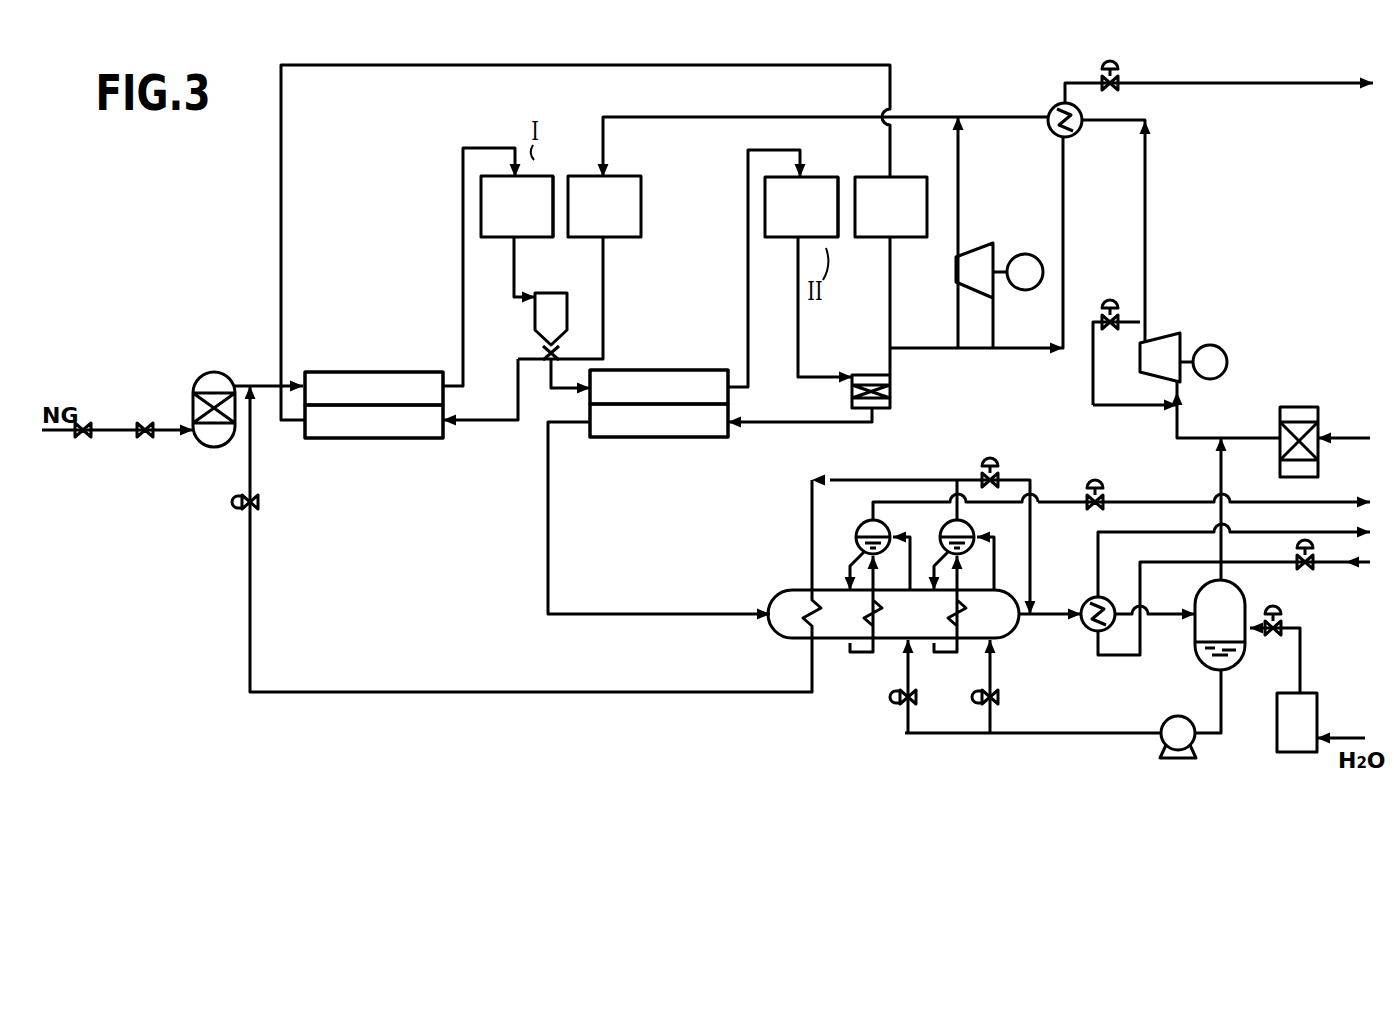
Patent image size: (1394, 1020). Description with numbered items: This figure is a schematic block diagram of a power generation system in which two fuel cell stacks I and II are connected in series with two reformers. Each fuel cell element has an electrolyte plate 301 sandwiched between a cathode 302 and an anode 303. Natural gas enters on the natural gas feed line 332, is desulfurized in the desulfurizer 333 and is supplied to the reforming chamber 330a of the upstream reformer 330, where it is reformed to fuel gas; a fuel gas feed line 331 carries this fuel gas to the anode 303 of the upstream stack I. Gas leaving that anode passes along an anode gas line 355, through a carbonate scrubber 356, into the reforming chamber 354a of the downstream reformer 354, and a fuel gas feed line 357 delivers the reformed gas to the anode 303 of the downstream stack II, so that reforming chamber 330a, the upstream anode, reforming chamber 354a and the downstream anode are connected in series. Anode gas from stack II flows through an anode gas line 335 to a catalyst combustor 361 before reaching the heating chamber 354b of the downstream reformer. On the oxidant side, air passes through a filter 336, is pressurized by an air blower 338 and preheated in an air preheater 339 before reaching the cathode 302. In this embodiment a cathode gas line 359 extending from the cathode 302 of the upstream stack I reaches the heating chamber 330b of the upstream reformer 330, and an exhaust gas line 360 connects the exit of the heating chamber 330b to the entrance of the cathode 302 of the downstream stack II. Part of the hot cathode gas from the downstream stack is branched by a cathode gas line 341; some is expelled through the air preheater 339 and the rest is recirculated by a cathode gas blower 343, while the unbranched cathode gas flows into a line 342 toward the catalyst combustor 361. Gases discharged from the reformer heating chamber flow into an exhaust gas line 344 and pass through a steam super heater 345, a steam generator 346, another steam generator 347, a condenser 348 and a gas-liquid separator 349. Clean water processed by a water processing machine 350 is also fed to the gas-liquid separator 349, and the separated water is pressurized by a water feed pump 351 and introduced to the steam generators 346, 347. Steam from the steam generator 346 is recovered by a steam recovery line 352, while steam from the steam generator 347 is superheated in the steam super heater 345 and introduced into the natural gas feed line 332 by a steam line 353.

The electrolyte plate 301 is at (704, 208).
The cathode 302 is at (594, 226).
The anode 303 is at (505, 226).
The upstream reformer 330 is at (376, 396).
The reforming chamber 330a is at (408, 378).
The heating chamber 330b is at (352, 432).
The fuel gas feed line 331 is at (463, 262).
The natural gas feed line 332 is at (113, 427).
The desulfurizer 333 is at (208, 372).
The anode gas line 335 is at (800, 360).
The filter 336 is at (1300, 407).
The air blower 338 is at (1168, 346).
The air preheater 339 is at (1082, 131).
The cathode gas line 341 is at (888, 320).
The line 342 is at (892, 376).
The cathode gas blower 343 is at (990, 250).
The exhaust gas line 344 is at (548, 593).
The steam super heater 345 is at (790, 606).
The steam generator 346 is at (838, 640).
The steam generator 347 is at (1012, 630).
The condenser 348 is at (1085, 600).
The gas-liquid separator 349 is at (1195, 642).
The water processing machine 350 is at (1315, 705).
The water feed pump 351 is at (1160, 745).
The steam recovery line 352 is at (1070, 500).
The steam line 353 is at (250, 598).
The downstream reformer 354 is at (642, 410).
The reforming chamber 354a is at (700, 380).
The heating chamber 354b is at (643, 432).
The anode gas line 355 is at (512, 297).
The carbonate scrubber 356 is at (563, 316).
The fuel gas feed line 357 is at (748, 298).
The cathode gas line 359 is at (491, 432).
The exhaust gas line 360 is at (281, 224).
The catalyst combustor 361 is at (895, 424).